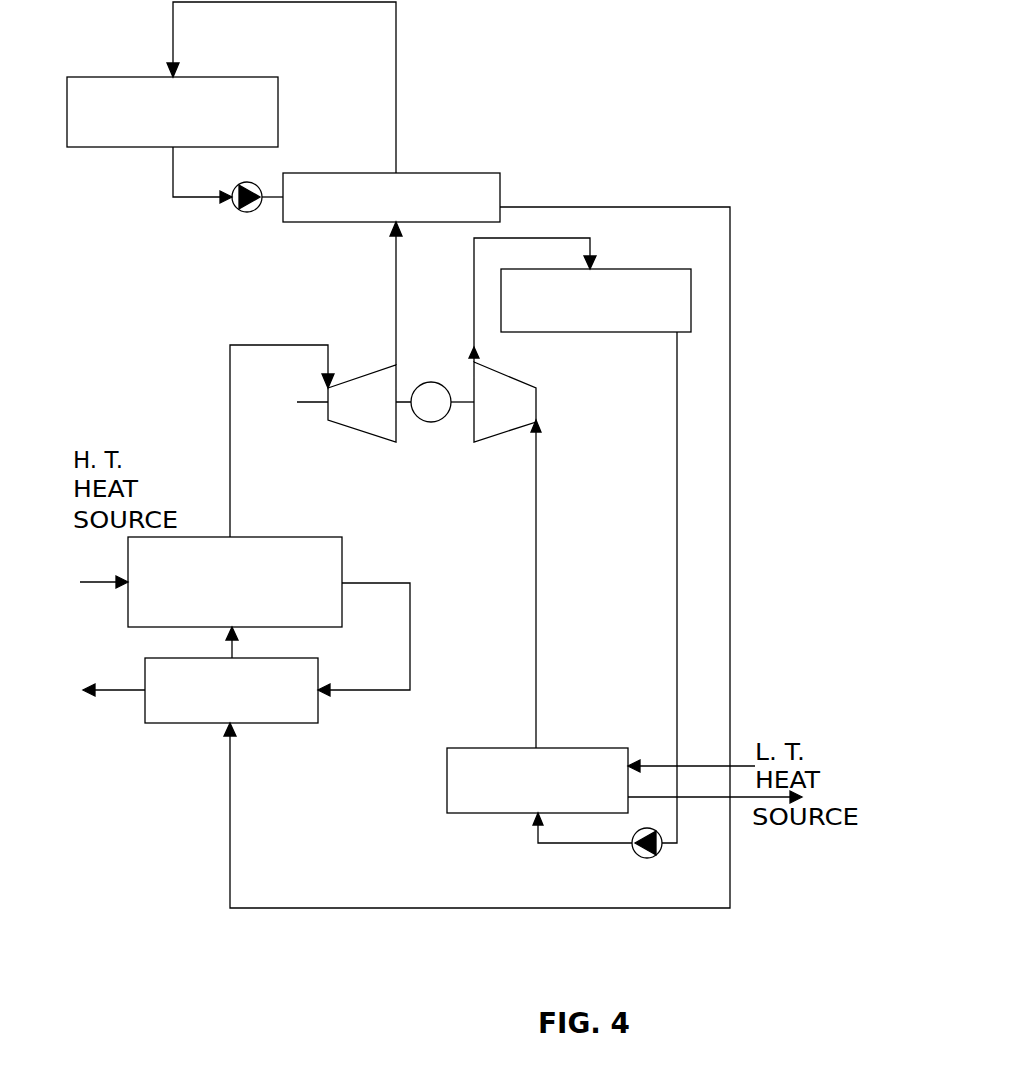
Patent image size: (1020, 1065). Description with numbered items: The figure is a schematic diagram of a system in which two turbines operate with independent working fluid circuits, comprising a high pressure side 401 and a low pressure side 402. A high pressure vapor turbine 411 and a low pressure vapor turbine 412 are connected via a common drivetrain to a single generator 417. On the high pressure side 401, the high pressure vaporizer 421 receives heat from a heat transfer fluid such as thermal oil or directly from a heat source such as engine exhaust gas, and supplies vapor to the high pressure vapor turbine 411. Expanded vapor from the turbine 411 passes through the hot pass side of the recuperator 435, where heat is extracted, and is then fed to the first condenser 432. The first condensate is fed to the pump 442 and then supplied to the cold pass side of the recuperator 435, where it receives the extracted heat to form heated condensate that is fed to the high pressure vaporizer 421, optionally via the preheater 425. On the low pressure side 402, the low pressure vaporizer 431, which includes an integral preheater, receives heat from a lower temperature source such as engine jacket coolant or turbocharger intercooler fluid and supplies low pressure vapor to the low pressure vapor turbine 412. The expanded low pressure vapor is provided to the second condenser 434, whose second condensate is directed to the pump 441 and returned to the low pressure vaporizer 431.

The high pressure side 401 is at (398, 934).
The low pressure side 402 is at (628, 934).
The high pressure vapor turbine 411 is at (338, 384).
The low pressure vapor turbine 412 is at (535, 388).
The generator 417 is at (418, 384).
The high pressure vaporizer 421 is at (336, 537).
The preheater 425 is at (316, 658).
The low pressure vaporizer 431 is at (620, 748).
The first condenser 432 is at (270, 78).
The second condenser 434 is at (675, 270).
The recuperator 435 is at (492, 173).
The pump 441 is at (650, 858).
The pump 442 is at (250, 212).